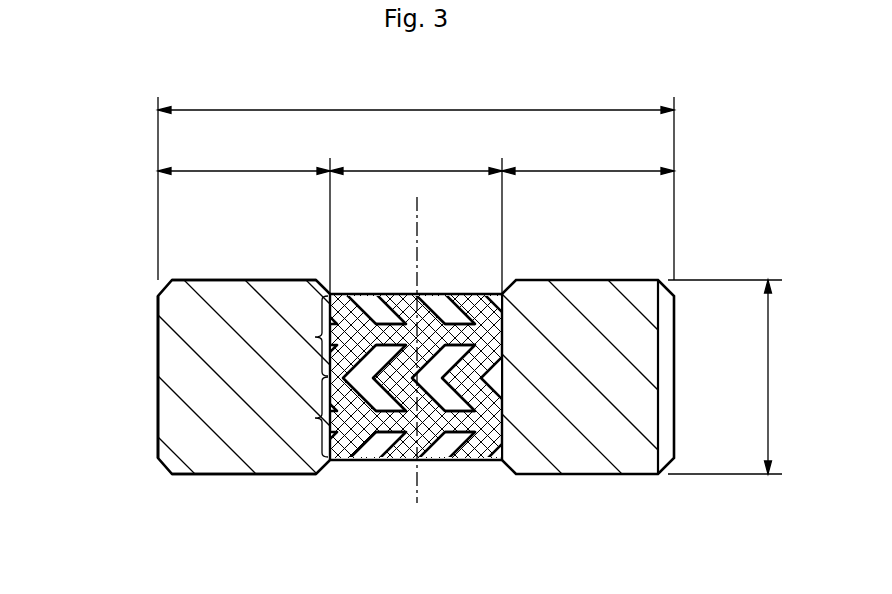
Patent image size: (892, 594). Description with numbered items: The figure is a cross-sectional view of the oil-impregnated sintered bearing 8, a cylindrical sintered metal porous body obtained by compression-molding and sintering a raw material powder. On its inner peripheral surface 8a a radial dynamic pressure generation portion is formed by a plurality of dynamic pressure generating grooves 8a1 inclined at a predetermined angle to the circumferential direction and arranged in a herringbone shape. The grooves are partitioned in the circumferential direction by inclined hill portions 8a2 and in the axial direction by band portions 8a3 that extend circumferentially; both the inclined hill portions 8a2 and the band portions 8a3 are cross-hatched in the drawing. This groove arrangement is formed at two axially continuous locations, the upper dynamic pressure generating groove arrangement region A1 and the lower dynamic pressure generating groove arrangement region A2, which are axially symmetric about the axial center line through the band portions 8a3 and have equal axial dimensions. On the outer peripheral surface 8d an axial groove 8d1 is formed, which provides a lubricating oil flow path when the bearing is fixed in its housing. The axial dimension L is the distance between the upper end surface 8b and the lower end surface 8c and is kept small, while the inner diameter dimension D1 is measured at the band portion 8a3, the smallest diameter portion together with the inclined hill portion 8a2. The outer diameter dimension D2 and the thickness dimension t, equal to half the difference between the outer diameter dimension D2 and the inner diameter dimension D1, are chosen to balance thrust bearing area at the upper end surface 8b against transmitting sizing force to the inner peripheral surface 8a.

The oil-impregnated sintered bearing 8 is at (124, 264).
The inner peripheral surface 8a is at (498, 292).
The dynamic pressure generating grooves 8a1 is at (437, 302).
The inclined hill portions 8a2 is at (393, 308).
The band portions 8a3 is at (390, 340).
The upper end surface 8b is at (233, 280).
The lower end surface 8c is at (231, 475).
The outer peripheral surface 8d is at (158, 372).
The axial groove 8d1 is at (659, 370).
The upper dynamic pressure generating groove arrangement region A1 is at (305, 336).
The lower dynamic pressure generating groove arrangement region A2 is at (305, 417).
The inner diameter dimension D1 is at (416, 219).
The outer diameter dimension D2 is at (416, 182).
The thickness dimension t is at (416, 159).
The axial dimension L is at (727, 377).